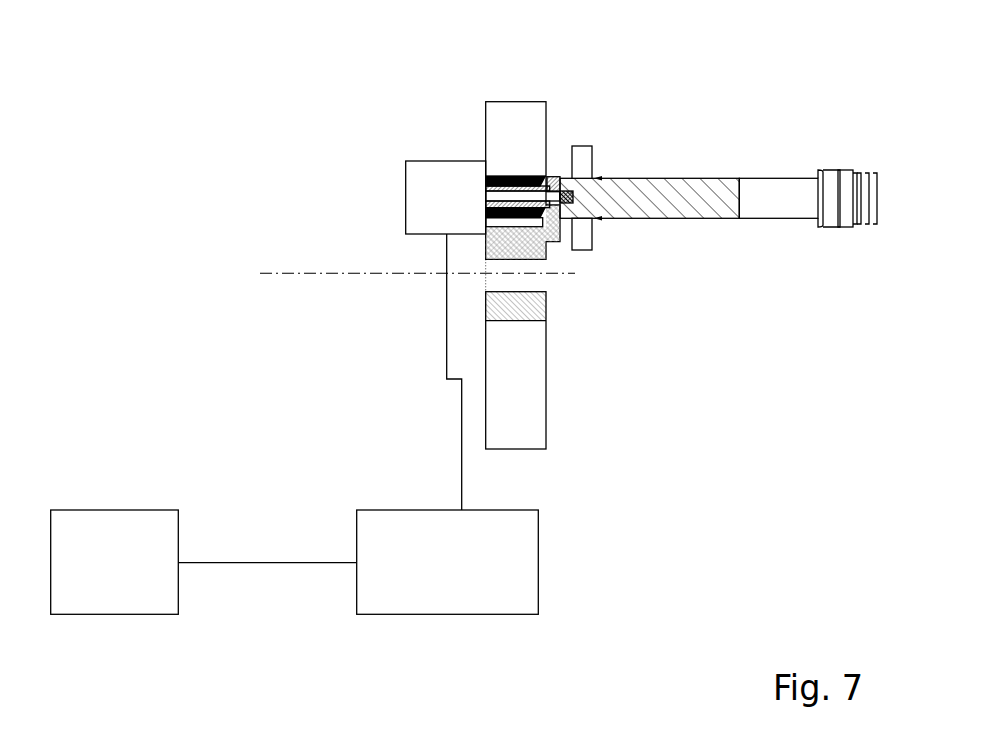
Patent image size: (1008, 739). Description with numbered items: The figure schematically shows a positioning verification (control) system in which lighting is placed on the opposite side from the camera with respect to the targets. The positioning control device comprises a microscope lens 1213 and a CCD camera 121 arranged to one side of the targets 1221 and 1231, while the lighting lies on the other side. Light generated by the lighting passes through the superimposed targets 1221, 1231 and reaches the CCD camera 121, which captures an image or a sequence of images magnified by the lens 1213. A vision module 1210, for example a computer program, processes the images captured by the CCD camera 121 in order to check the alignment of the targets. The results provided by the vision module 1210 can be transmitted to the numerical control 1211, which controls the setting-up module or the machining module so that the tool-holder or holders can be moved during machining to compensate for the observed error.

The CCD camera 121 is at (406, 190).
The microscope lens 1213 is at (510, 178).
The target 1231 is at (561, 192).
The target 1221 is at (595, 175).
The vision module 1210 is at (448, 562).
The numerical control 1211 is at (115, 562).